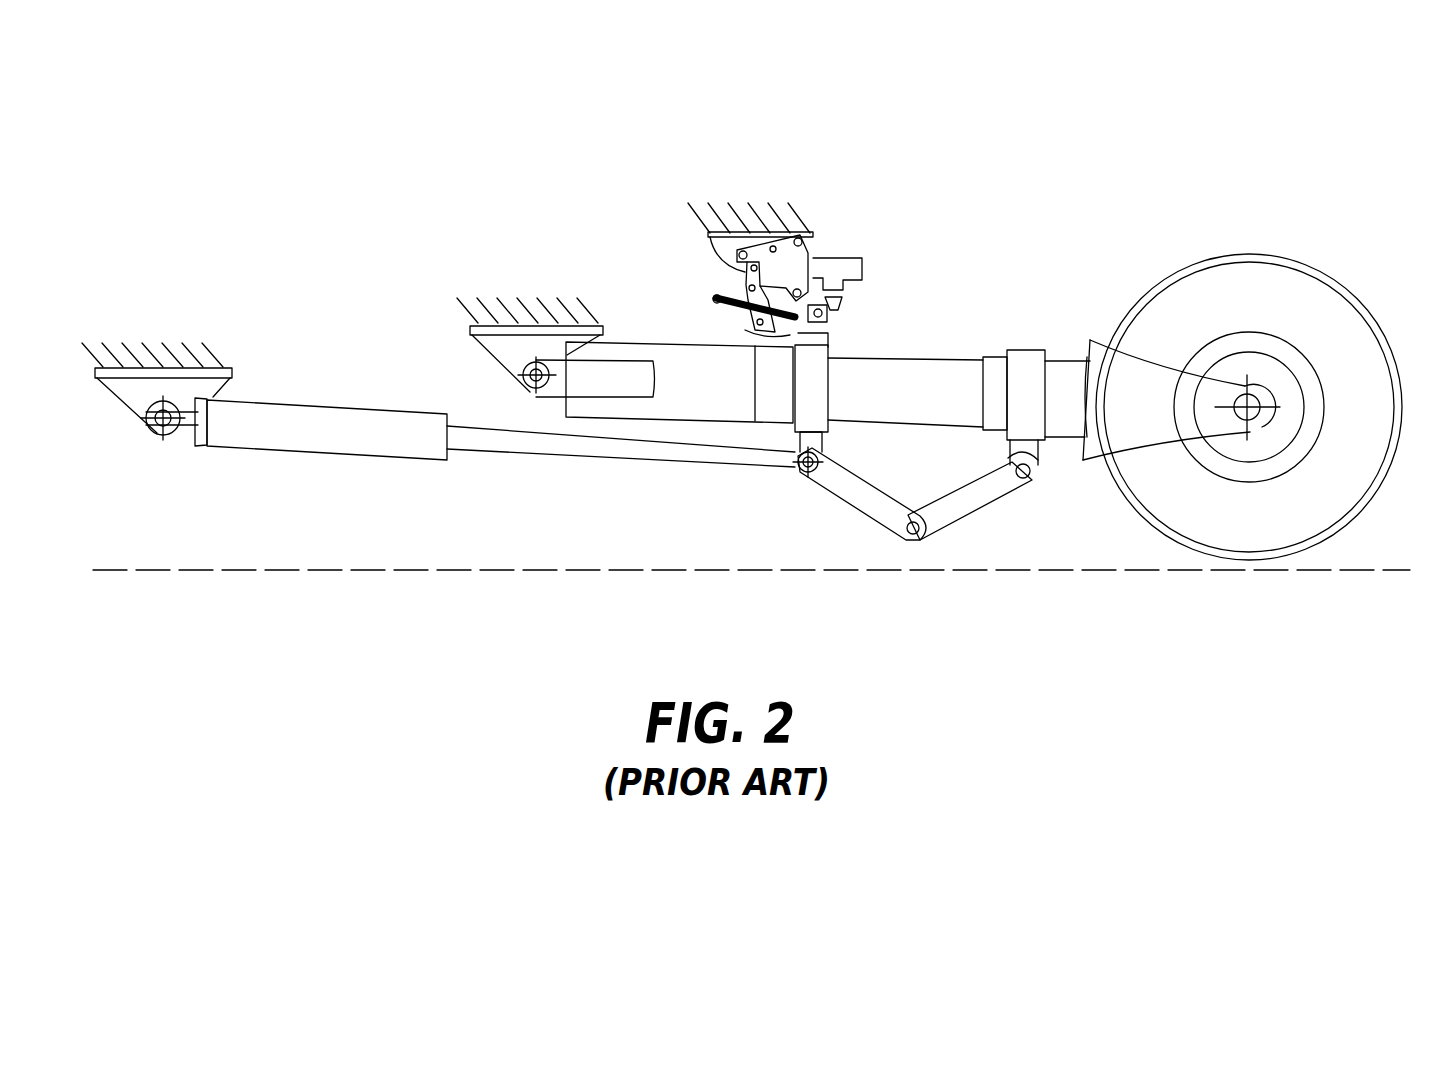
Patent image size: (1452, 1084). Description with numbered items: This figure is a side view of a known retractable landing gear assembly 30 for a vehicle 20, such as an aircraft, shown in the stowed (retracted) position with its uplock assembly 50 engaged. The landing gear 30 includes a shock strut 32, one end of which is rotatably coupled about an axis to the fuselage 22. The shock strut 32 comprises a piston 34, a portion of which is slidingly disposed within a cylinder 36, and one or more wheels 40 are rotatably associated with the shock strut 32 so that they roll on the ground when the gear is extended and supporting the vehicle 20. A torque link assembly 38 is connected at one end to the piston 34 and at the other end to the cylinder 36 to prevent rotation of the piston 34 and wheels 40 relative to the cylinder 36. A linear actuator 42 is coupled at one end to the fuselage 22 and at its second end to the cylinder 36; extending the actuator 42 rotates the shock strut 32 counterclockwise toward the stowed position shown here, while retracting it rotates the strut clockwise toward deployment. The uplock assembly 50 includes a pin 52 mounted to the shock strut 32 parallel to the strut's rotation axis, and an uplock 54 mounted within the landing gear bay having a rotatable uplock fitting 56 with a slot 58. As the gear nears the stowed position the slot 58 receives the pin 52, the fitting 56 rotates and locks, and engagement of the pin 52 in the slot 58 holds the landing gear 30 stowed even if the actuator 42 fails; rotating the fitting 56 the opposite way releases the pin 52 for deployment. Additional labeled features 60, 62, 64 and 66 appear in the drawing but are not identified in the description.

The vehicle 20 is at (151, 598).
The fuselage 22 is at (116, 572).
The landing gear assembly 30 is at (580, 283).
The shock strut 32 is at (660, 332).
The piston 34 is at (947, 368).
The cylinder 36 is at (628, 341).
The torque link assembly 38 is at (850, 524).
The wheel 40 is at (1320, 268).
The linear actuator 42 is at (312, 410).
The uplock assembly 50 is at (816, 276).
The pin 52 is at (828, 316).
The uplock 54 is at (840, 250).
The uplock fitting 56 is at (790, 330).
The slot 58 is at (832, 304).
The pivot pin 60 is at (525, 375).
The wheel axle / fork 62 is at (1250, 410).
The actuator rod pivot 64 is at (800, 472).
The actuator mount pivot 66 is at (160, 418).